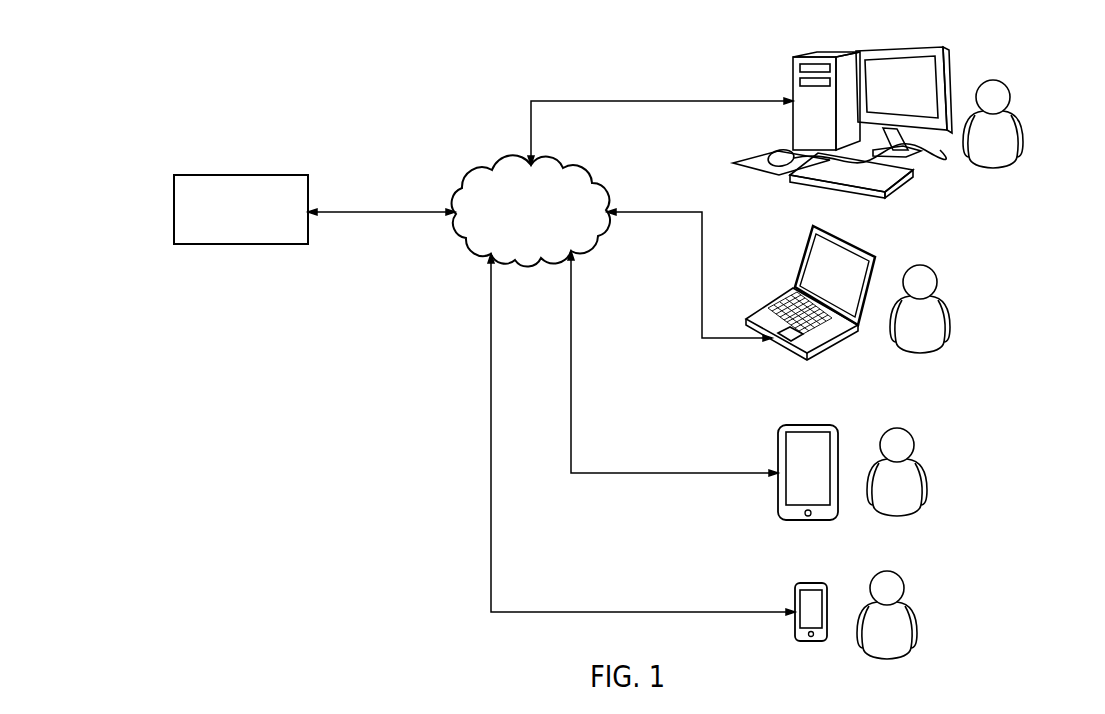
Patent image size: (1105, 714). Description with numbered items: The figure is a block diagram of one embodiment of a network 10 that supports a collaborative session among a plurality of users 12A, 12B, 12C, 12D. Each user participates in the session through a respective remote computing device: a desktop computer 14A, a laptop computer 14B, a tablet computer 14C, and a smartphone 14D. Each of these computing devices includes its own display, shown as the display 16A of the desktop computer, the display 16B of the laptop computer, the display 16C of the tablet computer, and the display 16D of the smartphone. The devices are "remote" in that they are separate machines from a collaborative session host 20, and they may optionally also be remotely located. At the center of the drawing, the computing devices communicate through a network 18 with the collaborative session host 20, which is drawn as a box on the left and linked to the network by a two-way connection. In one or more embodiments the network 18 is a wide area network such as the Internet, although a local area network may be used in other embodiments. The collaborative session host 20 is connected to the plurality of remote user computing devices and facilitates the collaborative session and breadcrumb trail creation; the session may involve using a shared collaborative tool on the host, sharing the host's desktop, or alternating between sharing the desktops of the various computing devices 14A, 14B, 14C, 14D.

The network 10 is at (201, 64).
The user 12A is at (1018, 122).
The user 12B is at (946, 312).
The user 12C is at (925, 472).
The user 12D is at (914, 616).
The desktop computer 14A is at (793, 78).
The laptop computer 14B is at (761, 318).
The tablet computer 14C is at (778, 453).
The smartphone 14D is at (795, 601).
The display 16A is at (908, 64).
The display 16B is at (845, 262).
The display 16C is at (808, 442).
The display 16D is at (812, 598).
The network 18 is at (580, 165).
The collaborative session host 20 is at (293, 176).